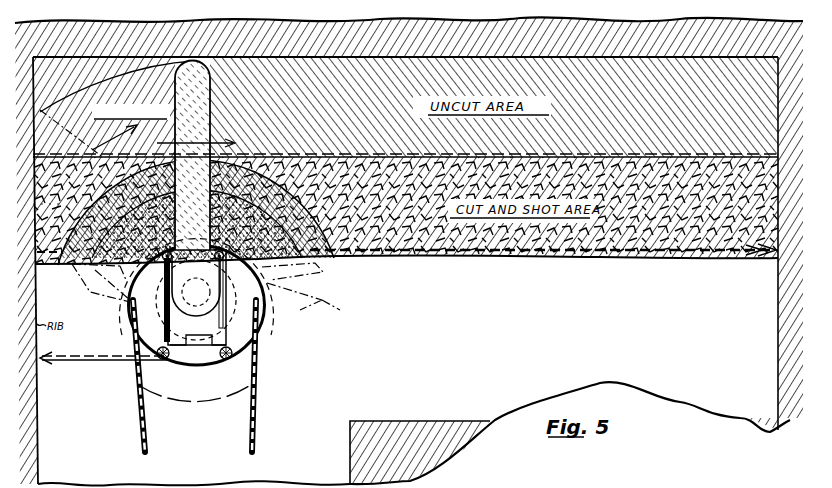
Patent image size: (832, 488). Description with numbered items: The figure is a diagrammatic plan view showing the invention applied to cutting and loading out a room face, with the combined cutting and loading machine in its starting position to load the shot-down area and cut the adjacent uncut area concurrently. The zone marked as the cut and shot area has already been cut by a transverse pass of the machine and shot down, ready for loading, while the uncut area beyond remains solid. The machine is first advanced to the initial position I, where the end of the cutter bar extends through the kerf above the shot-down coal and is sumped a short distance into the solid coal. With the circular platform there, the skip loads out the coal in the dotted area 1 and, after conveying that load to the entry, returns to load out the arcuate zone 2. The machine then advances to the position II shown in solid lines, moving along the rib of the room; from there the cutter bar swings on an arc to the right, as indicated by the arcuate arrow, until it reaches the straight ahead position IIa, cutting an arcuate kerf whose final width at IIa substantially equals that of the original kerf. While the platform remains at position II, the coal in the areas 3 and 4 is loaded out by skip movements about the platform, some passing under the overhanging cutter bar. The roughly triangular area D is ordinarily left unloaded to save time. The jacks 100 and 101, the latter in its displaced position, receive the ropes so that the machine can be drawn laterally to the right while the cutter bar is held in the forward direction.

The straight ahead position IIa is at (194, 62).
The machine position II is at (40, 112).
The initial machine position I is at (33, 157).
The triangular area D is at (36, 204).
The jack 100 is at (767, 259).
The jack 101 is at (48, 362).
The dotted area 1 is at (144, 224).
The arcuate zone 2 is at (249, 224).
The area 3 is at (127, 212).
The area 4 is at (265, 209).